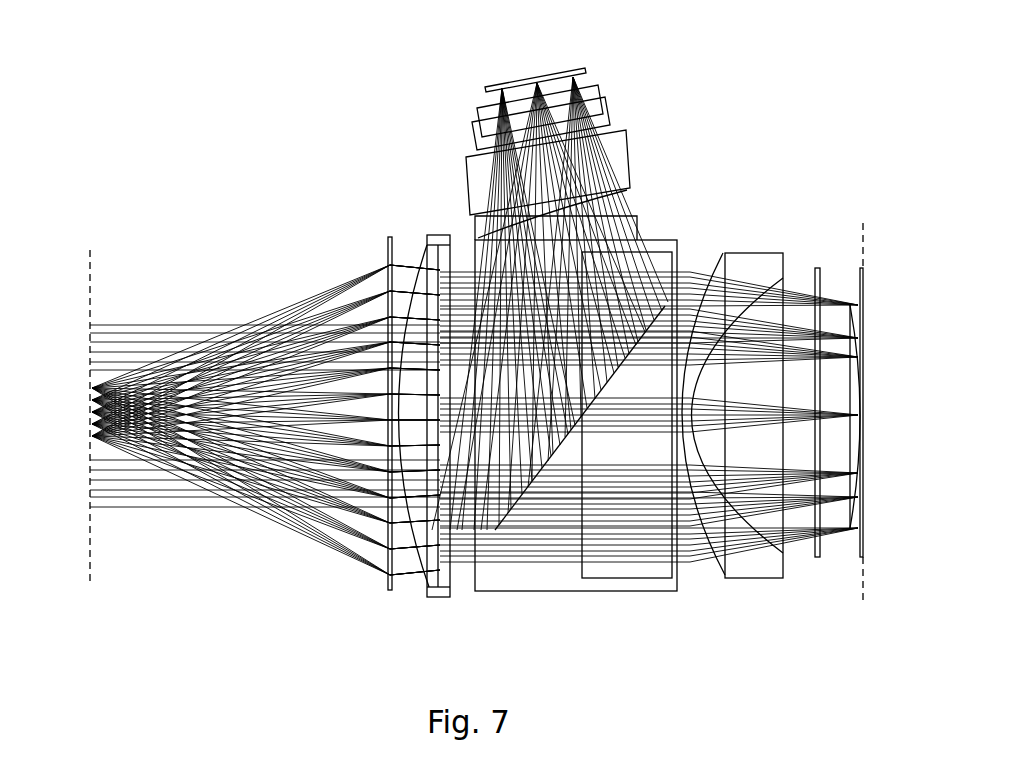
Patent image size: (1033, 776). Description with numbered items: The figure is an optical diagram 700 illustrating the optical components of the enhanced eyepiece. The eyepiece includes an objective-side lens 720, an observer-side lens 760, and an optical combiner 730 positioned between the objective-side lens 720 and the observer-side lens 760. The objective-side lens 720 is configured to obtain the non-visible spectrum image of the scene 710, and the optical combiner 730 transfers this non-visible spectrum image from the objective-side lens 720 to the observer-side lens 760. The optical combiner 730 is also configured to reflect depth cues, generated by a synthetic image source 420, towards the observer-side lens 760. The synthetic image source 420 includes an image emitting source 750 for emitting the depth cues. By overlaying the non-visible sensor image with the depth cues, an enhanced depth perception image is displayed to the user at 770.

The optical diagram 700 is at (113, 119).
The non-visible spectrum image of the scene 710 is at (863, 223).
The objective-side lens 720 is at (752, 578).
The optical combiner 730 is at (575, 591).
The image emitting source 750 is at (532, 72).
The synthetic image source 420 is at (579, 113).
The observer-side lens 760 is at (450, 597).
The enhanced depth perception image displayed to the user 770 is at (90, 250).